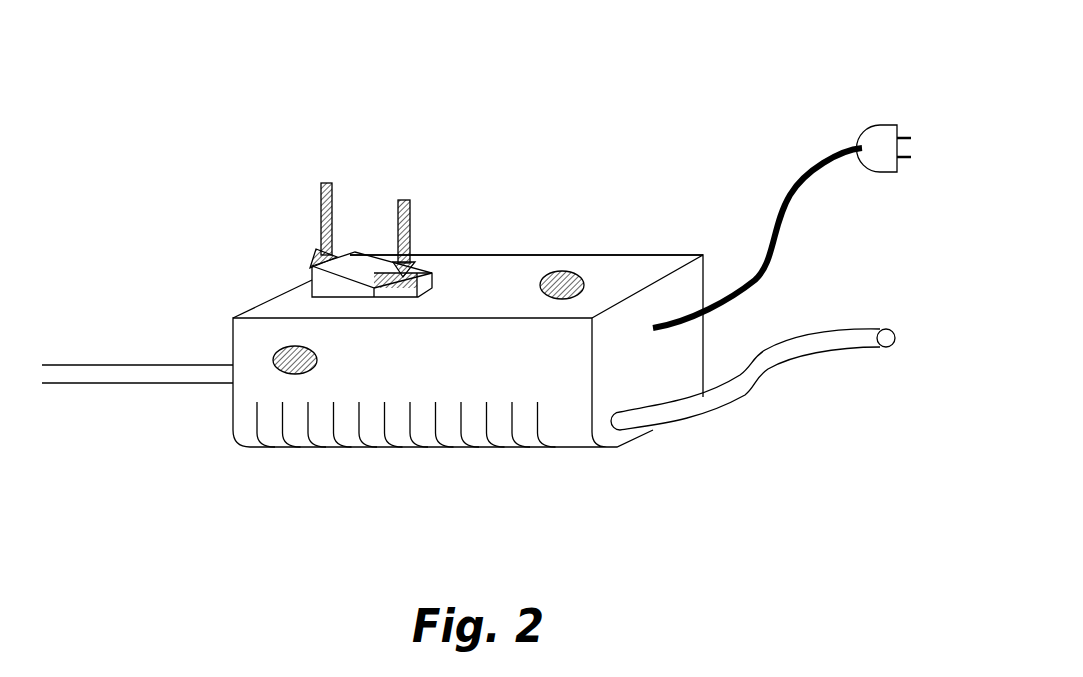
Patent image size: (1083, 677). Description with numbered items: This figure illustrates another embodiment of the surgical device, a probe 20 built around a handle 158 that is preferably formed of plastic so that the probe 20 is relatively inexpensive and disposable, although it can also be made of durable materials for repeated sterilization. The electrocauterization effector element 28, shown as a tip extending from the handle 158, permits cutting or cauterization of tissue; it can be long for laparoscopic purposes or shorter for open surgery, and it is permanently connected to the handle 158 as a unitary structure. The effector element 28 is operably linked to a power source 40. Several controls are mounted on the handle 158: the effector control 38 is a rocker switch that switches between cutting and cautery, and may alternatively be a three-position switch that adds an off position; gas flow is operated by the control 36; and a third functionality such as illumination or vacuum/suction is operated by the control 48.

The probe 20 is at (506, 135).
The handle 158 is at (498, 256).
The control 48 is at (573, 272).
The control 36 is at (293, 345).
The effector control 38 is at (313, 262).
The effector element 28 is at (118, 383).
The power source 40 is at (887, 178).